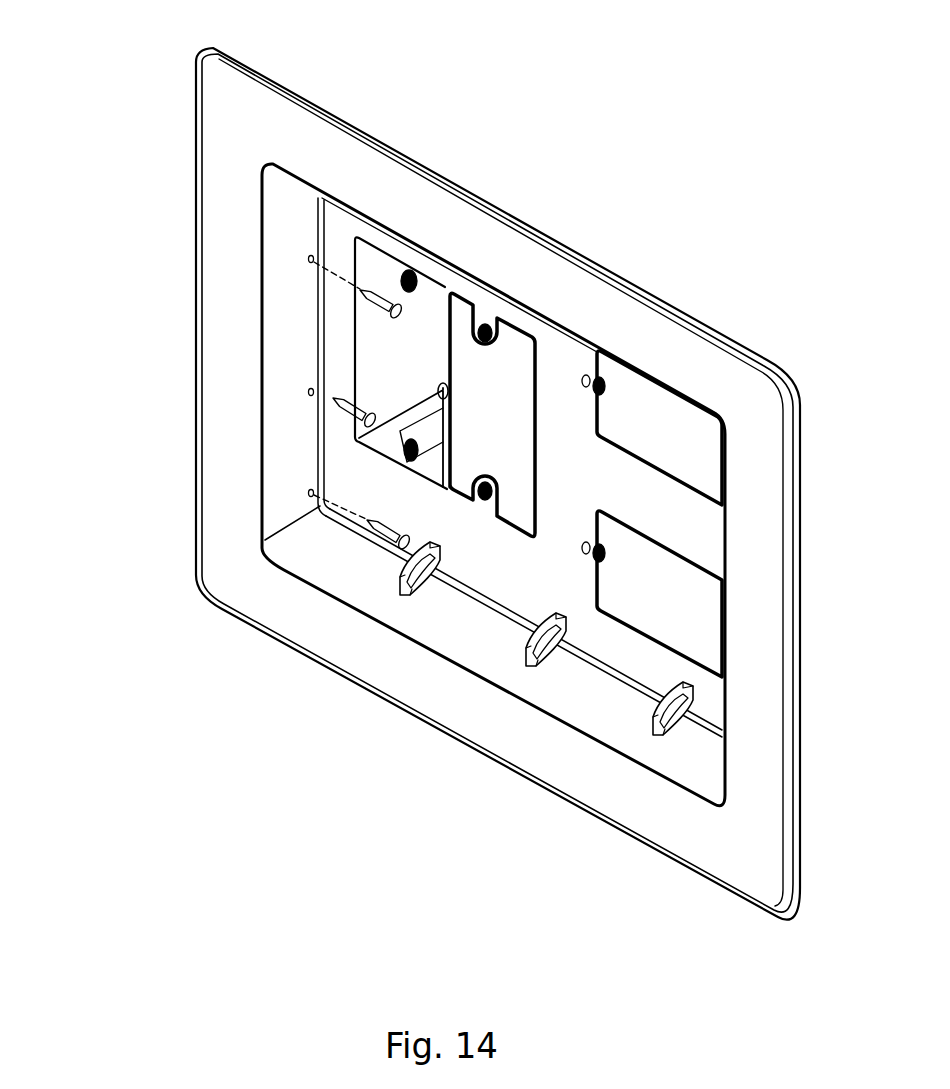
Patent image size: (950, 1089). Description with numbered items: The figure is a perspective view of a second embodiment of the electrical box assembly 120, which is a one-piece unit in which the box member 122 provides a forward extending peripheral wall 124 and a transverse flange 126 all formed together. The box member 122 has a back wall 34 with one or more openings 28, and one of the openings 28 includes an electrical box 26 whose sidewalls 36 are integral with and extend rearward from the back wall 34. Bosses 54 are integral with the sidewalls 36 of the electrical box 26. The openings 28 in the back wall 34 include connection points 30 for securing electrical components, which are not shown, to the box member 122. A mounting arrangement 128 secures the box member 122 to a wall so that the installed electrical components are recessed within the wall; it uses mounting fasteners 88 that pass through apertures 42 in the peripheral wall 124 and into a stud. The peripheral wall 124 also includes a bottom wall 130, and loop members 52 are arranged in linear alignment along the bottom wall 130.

The electrical box assembly 120 is at (128, 184).
The box member 122 is at (382, 128).
The peripheral wall 124 is at (297, 297).
The transverse flange 126 is at (750, 552).
The mounting arrangement 128 is at (352, 545).
The bottom wall 130 is at (477, 639).
The electrical box 26 is at (430, 298).
The openings 28 is at (506, 420).
The connection points 30 is at (490, 325).
The back wall 34 is at (585, 479).
The sidewalls 36 is at (415, 362).
The apertures 42 is at (312, 393).
The loop members 52 is at (400, 577).
The bosses 54 is at (407, 450).
The mounting fasteners 88 is at (360, 423).